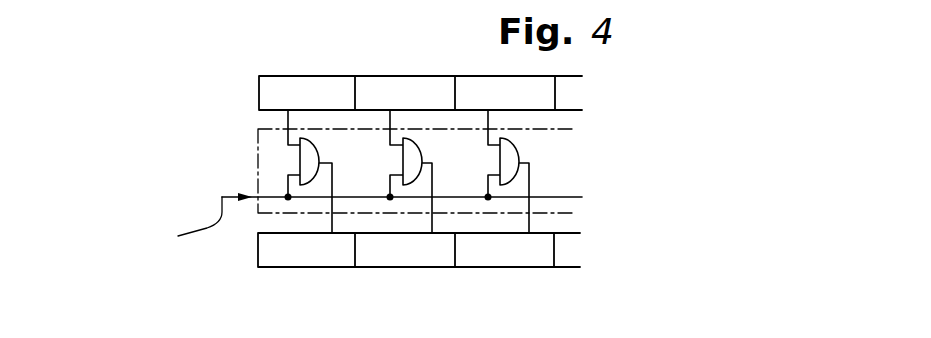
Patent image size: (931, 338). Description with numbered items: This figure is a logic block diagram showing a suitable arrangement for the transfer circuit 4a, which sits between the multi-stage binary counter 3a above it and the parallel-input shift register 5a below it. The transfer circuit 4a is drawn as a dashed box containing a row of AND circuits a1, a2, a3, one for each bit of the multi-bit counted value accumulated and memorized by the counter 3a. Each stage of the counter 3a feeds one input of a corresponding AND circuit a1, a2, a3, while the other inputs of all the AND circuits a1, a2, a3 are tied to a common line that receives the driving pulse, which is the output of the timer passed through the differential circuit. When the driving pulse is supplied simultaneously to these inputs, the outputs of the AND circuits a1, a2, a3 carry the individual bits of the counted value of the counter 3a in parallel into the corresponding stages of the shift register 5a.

The multi-stage binary counter 3a is at (311, 80).
The transfer circuit 4a is at (257, 166).
The parallel-input shift register 5a is at (406, 266).
The AND circuit a1 is at (314, 152).
The AND circuit a2 is at (417, 152).
The AND circuit a3 is at (515, 152).